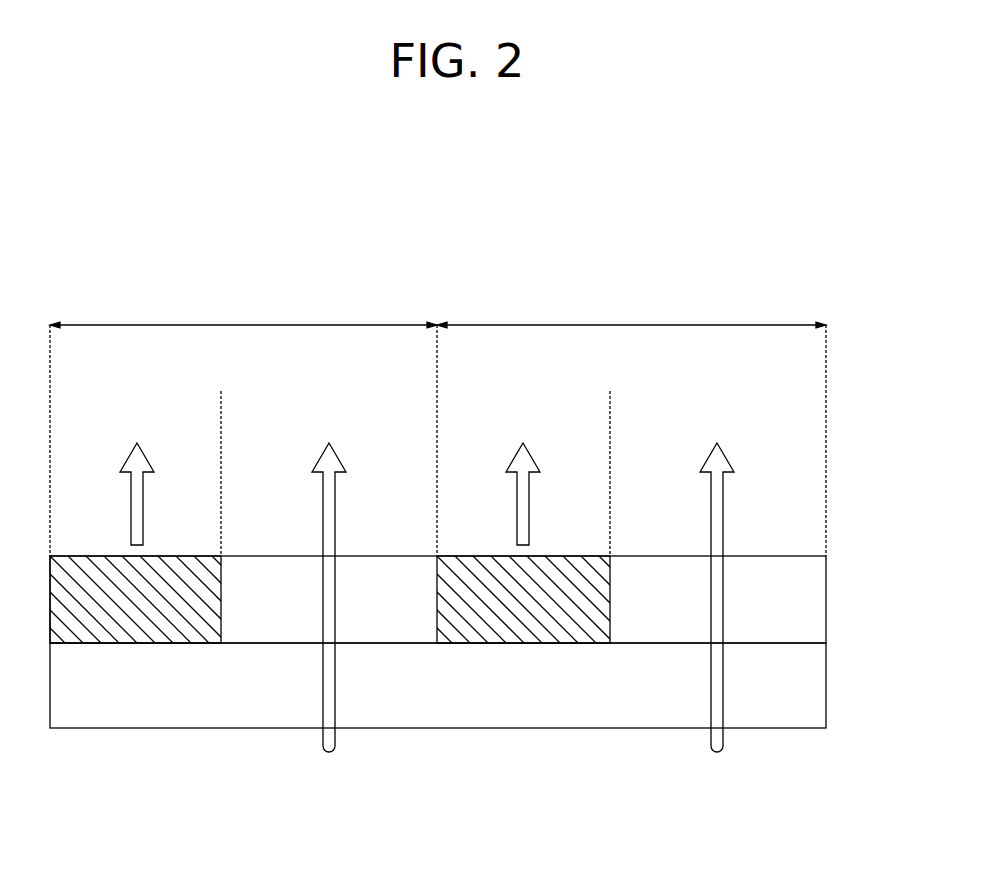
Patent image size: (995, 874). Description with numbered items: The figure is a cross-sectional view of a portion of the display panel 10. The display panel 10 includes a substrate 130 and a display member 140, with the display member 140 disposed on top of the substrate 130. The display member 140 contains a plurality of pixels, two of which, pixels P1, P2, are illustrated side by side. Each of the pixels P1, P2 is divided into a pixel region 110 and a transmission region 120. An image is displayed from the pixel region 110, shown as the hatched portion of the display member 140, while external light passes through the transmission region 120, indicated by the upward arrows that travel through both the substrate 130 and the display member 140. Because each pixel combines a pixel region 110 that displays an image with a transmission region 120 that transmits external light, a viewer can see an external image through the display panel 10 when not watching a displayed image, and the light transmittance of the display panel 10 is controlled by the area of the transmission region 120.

The display panel 10 is at (452, 206).
The pixel region 110 is at (50, 391).
The transmission region 120 is at (221, 391).
The substrate 130 is at (815, 687).
The display member 140 is at (818, 604).
The pixel P1 is at (243, 313).
The pixel P2 is at (631, 313).